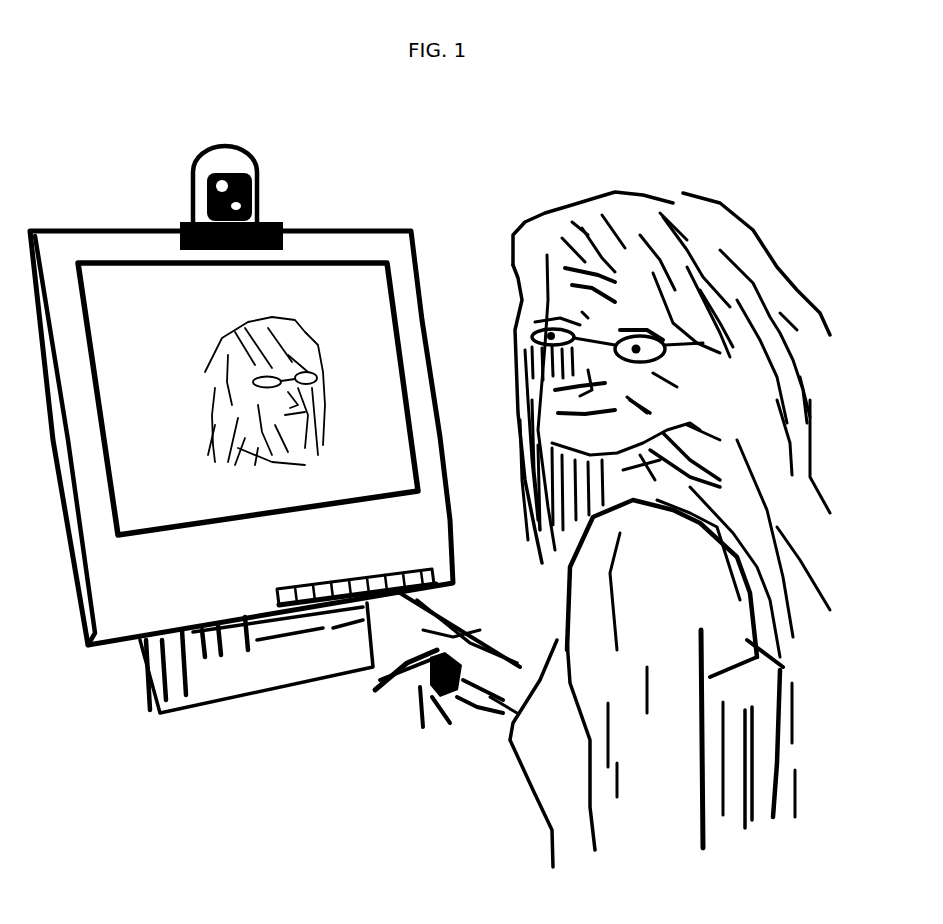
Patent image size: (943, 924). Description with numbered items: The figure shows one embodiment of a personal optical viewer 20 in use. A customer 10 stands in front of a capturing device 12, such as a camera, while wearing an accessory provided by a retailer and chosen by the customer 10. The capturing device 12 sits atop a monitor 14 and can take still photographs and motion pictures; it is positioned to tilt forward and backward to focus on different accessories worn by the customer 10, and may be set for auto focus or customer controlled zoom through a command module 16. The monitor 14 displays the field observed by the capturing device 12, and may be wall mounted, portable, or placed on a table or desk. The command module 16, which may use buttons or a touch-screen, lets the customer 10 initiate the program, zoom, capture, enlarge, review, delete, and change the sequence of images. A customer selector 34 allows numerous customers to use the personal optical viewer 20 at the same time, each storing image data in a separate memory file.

The customer 10 is at (502, 806).
The capturing device 12 is at (253, 192).
The monitor 14 is at (152, 340).
The command module 16 is at (330, 603).
The personal optical viewer 20 is at (283, 454).
The customer selector 34 is at (247, 667).